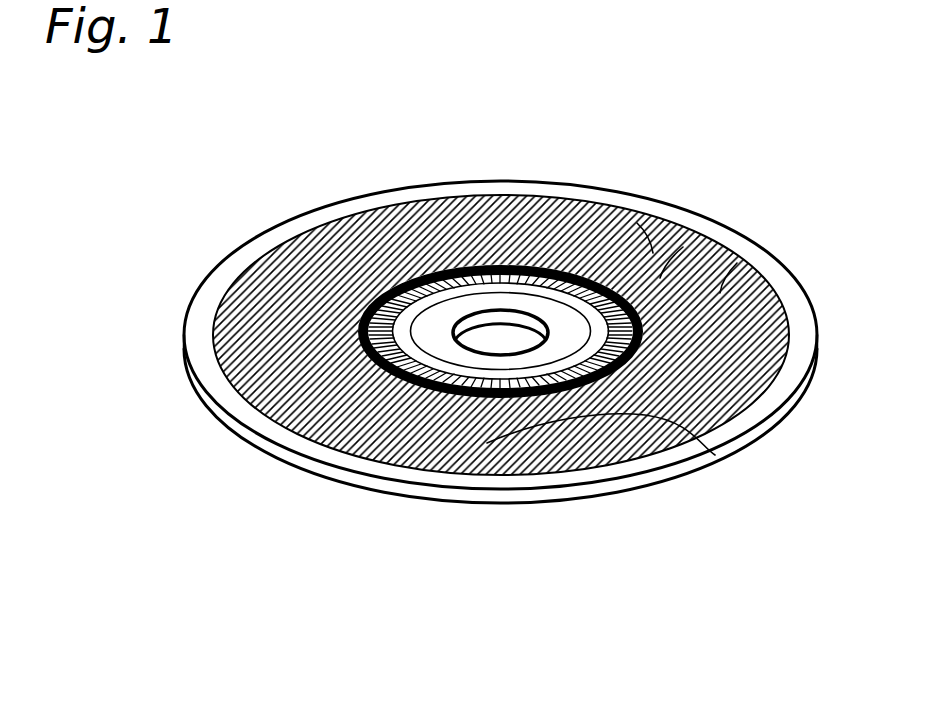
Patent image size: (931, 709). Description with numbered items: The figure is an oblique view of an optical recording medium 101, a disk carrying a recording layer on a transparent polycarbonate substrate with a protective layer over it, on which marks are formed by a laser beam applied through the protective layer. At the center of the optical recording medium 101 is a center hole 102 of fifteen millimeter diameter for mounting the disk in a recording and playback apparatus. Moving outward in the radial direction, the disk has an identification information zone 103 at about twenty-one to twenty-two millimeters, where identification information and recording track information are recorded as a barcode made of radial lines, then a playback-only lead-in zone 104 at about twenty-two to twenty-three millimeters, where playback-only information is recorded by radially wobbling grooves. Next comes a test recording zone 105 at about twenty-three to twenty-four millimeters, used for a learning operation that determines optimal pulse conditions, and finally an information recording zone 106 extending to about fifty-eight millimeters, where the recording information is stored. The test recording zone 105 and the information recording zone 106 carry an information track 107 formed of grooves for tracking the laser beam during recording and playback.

The optical recording medium 101 is at (207, 248).
The center hole 102 is at (487, 313).
The identification information zone 103 is at (593, 325).
The playback-only lead-in zone 104 is at (595, 282).
The test recording zone 105 is at (660, 262).
The information recording zone 106 is at (728, 275).
The information track 107 is at (715, 455).